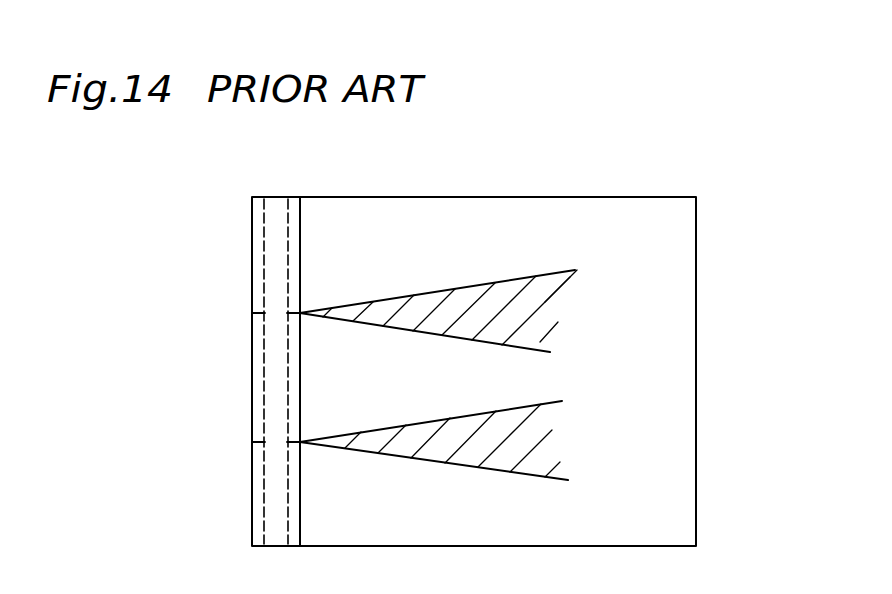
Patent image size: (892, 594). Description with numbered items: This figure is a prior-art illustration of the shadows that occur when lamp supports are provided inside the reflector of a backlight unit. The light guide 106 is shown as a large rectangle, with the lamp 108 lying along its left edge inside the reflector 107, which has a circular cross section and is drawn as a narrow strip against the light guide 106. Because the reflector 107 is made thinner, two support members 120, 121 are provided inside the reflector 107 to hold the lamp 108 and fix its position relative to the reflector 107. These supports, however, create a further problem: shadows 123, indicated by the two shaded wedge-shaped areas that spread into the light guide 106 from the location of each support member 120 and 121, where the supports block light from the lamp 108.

The light guide 106 is at (498, 210).
The reflector 107 is at (256, 211).
The lamp 108 is at (278, 213).
The support member 120 is at (254, 313).
The support member 121 is at (254, 442).
The shadows 123 is at (528, 432).